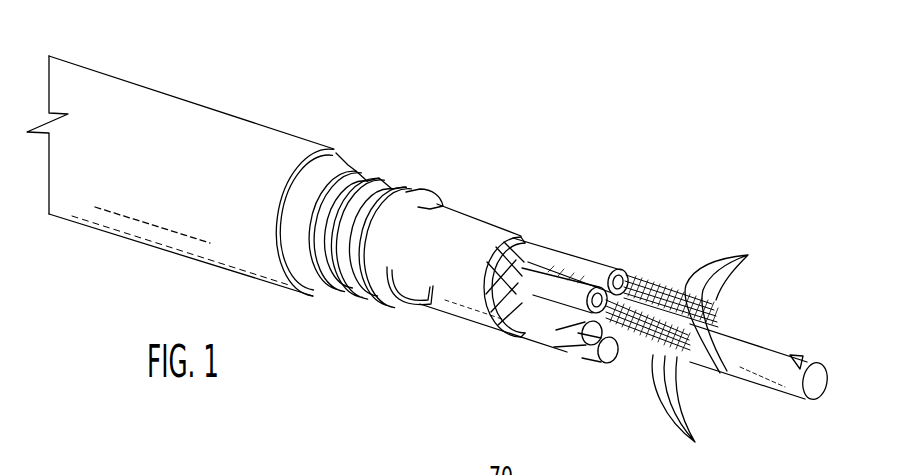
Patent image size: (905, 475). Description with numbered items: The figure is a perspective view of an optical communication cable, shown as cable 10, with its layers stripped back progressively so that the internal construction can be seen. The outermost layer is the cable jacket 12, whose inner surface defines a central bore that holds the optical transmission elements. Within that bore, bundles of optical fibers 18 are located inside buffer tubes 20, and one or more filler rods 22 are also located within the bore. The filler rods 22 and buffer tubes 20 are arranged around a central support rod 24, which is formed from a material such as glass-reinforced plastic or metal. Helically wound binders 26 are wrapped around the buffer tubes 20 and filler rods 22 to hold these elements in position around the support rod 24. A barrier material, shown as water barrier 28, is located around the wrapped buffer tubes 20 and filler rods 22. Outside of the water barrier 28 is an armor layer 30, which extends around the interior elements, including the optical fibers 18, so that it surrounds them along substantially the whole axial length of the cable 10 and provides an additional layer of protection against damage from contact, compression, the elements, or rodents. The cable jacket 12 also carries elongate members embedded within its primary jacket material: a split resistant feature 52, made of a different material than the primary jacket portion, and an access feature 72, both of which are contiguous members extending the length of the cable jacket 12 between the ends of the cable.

The cable 10 is at (468, 104).
The cable jacket 12 is at (232, 127).
The optical fibers 18 is at (748, 255).
The buffer tubes 20 is at (551, 265).
The filler rods 22 is at (572, 342).
The central support rod 24 is at (822, 373).
The helically wound binders 26 is at (505, 326).
The water barrier 28 is at (467, 230).
The armor layer 30 is at (383, 180).
The split resistant feature 52 is at (360, 160).
The access feature 72 is at (312, 293).